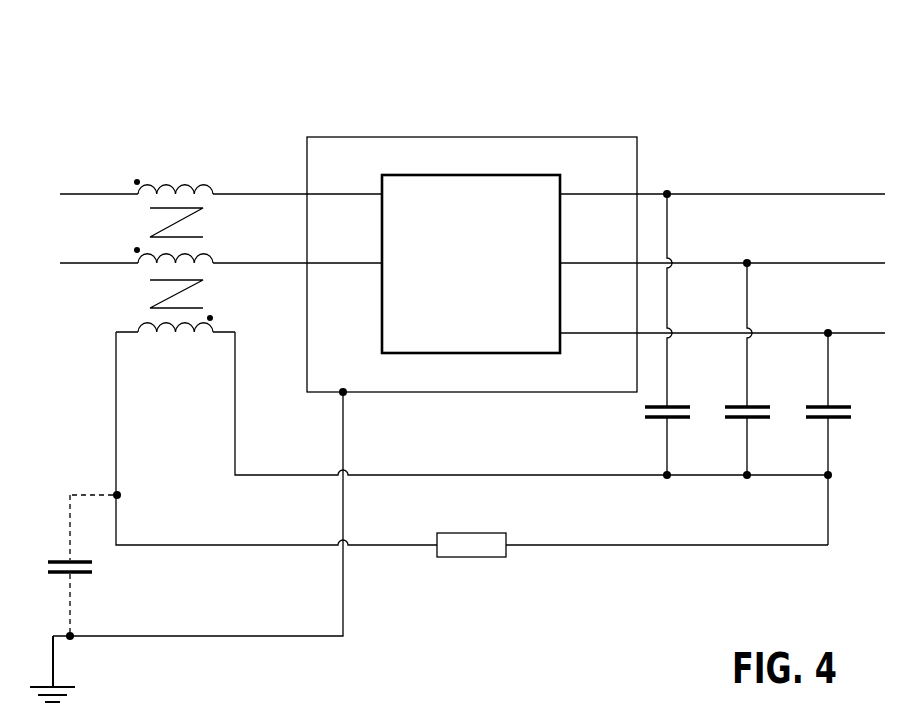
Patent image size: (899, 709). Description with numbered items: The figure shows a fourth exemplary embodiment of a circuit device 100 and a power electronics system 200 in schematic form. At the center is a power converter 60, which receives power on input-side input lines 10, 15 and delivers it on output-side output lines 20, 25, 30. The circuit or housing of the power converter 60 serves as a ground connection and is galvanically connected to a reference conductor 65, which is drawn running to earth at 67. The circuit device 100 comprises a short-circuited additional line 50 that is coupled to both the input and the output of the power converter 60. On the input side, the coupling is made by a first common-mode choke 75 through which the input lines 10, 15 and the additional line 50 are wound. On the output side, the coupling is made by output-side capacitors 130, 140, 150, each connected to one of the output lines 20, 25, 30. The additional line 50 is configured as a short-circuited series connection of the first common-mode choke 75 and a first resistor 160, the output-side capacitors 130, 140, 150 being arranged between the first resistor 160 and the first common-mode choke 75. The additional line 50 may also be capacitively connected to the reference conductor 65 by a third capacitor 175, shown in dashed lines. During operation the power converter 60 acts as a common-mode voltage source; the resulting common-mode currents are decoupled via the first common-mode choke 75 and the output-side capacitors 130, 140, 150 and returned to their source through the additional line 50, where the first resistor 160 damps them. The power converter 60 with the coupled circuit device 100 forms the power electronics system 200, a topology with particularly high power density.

The circuit device 100 is at (183, 112).
The power electronics system 200 is at (455, 359).
The input line 10 is at (272, 192).
The input line 15 is at (266, 262).
The output line 20 is at (622, 192).
The output line 25 is at (622, 262).
The output line 30 is at (624, 332).
The additional line 50 is at (195, 543).
The power converter 60 is at (337, 158).
The reference conductor 65 is at (266, 635).
The ground connection 67 is at (53, 660).
The first common-mode choke 75 is at (138, 330).
The output-side capacitor 130 is at (680, 404).
The output-side capacitor 140 is at (762, 404).
The output-side capacitor 150 is at (845, 404).
The first resistor 160 is at (483, 560).
The third capacitor 175 is at (60, 558).